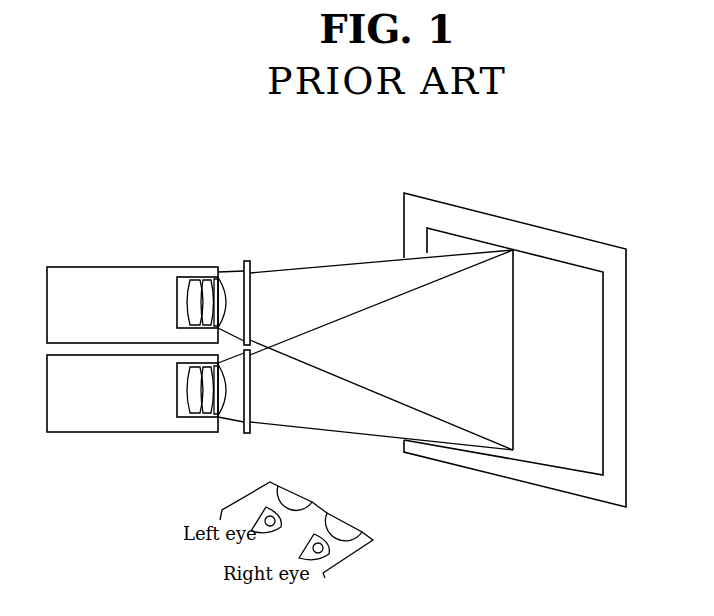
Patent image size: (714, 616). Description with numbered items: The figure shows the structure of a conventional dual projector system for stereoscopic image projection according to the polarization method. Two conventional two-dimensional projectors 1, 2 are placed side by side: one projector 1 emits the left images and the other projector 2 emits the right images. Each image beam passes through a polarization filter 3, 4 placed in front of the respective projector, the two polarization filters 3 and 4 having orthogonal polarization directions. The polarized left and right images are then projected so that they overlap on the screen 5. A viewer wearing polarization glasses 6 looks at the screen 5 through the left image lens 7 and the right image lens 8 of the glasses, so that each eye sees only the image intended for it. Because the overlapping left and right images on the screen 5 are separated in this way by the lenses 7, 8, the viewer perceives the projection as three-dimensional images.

The two-dimensional projector 1 is at (118, 278).
The two-dimensional projector 2 is at (100, 422).
The polarization filter 3 is at (246, 262).
The polarization filter 4 is at (246, 436).
The screen 5 is at (414, 235).
The polarization glasses 6 is at (373, 540).
The left image lens 7 is at (295, 495).
The right image lens 8 is at (343, 525).